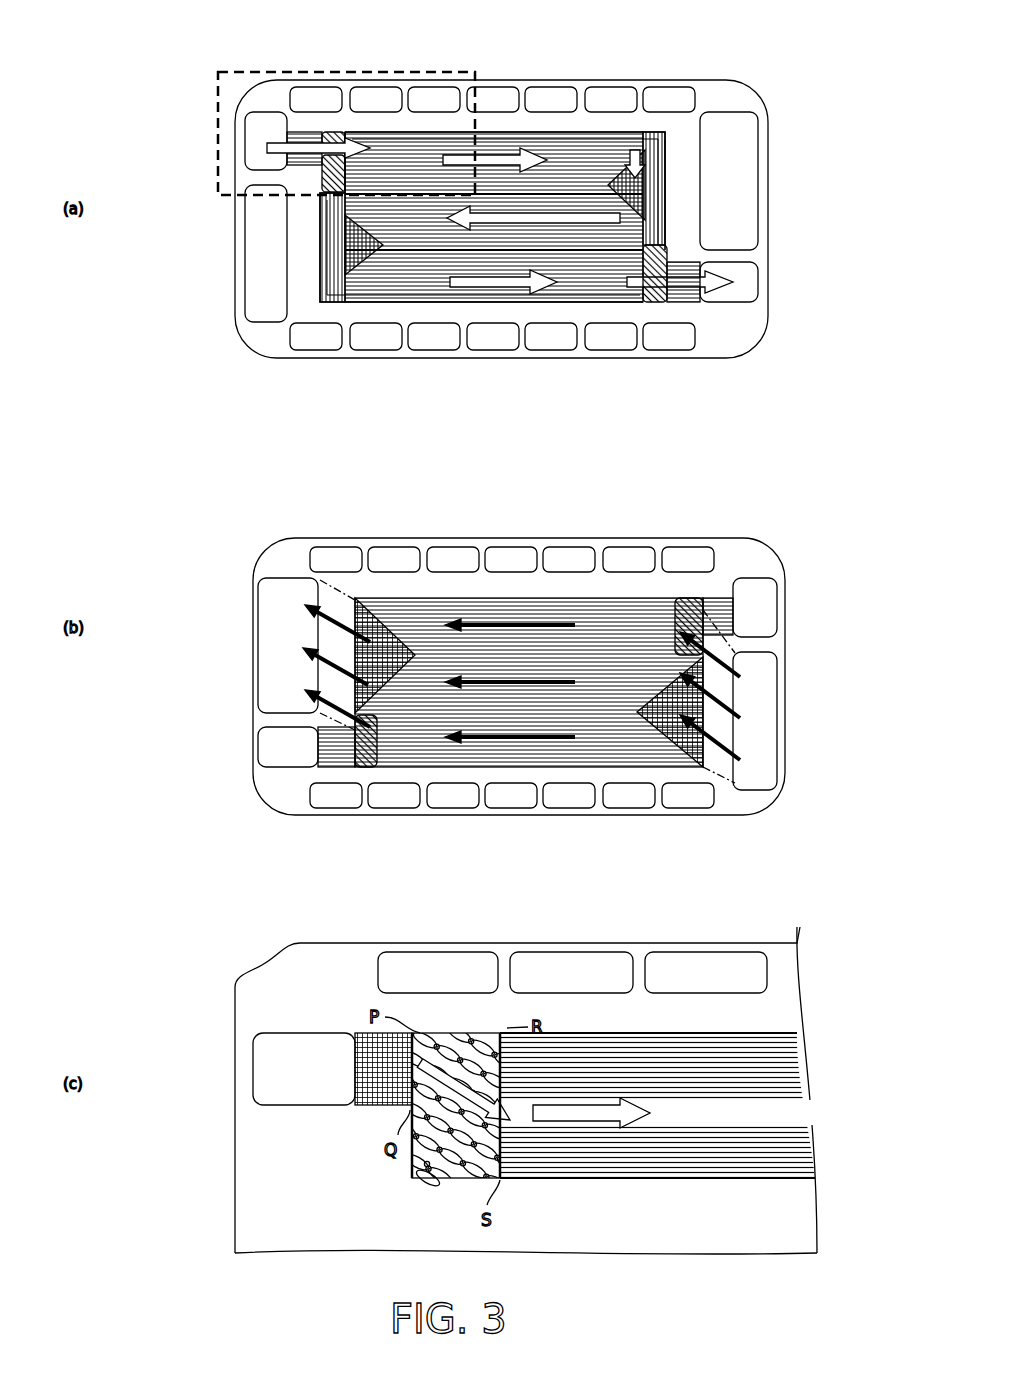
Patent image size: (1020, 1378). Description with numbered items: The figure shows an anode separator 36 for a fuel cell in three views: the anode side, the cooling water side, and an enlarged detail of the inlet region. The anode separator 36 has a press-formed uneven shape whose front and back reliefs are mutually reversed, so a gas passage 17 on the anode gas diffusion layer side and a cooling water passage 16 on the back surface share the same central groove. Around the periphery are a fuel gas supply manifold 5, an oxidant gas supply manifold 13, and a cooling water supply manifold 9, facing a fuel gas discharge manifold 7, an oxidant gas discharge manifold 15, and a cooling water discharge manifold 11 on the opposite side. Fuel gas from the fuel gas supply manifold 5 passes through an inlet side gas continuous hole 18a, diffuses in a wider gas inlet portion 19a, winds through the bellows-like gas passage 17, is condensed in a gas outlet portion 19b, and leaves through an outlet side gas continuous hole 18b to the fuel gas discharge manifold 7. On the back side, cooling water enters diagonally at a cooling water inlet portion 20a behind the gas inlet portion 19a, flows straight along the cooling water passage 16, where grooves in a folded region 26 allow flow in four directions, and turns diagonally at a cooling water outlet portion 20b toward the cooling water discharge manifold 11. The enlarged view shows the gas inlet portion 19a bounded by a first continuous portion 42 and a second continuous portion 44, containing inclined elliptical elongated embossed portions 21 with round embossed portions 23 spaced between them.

The fuel gas supply manifold 5 is at (240, 145).
The fuel gas discharge manifold 7 is at (757, 282).
The cooling water supply manifold 9 is at (235, 253).
The cooling water discharge manifold 11 is at (760, 187).
The oxidant gas supply manifold 13 is at (553, 88).
The oxidant gas discharge manifold 15 is at (377, 350).
The cooling water passage 16 is at (405, 632).
The gas passage 17 is at (405, 180).
The inlet side gas continuous hole 18a is at (303, 132).
The outlet side gas continuous hole 18b is at (683, 302).
The gas inlet portion 19a is at (336, 132).
The gas outlet portion 19b is at (653, 302).
The cooling water inlet portion 20a is at (690, 600).
The cooling water outlet portion 20b is at (365, 770).
The elongated embossed portion 21 is at (420, 1182).
The round embossed portion 23 is at (425, 1165).
The folded region 26 is at (653, 160).
The anode separator 36 is at (605, 80).
The first continuous portion 42 is at (413, 1035).
The second continuous portion 44 is at (500, 1033).